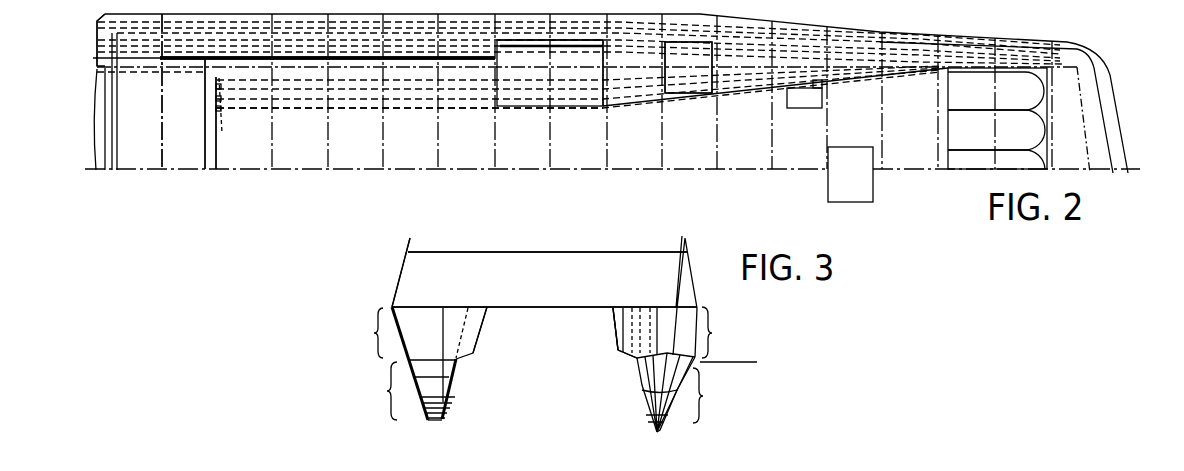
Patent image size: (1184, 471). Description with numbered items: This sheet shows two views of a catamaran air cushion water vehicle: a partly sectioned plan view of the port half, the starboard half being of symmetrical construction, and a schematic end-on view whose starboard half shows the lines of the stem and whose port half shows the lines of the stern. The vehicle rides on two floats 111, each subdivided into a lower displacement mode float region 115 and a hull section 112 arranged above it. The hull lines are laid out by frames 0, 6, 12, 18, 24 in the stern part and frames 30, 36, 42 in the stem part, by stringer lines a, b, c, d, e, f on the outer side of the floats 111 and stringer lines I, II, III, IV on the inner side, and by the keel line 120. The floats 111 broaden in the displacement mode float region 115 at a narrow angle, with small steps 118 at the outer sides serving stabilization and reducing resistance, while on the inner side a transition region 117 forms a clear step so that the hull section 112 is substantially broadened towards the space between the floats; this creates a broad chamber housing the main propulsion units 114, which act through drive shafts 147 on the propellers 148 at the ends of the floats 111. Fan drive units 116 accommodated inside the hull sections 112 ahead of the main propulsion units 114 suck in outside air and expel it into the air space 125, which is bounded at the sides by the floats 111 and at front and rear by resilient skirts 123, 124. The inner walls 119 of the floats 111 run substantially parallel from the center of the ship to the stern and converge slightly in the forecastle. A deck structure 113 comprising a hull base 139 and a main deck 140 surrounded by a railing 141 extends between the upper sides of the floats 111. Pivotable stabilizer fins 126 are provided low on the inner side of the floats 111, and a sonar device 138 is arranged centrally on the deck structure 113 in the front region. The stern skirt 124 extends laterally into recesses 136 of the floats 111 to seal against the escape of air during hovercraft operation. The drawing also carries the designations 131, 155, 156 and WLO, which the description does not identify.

In FIG. 3, the floats 111 is at (353, 348).
In FIG. 3, the hull section 112 is at (544, 332).
In FIG. 3, the deck structure 113 is at (537, 295).
In FIG. 2, the main propulsion units 114 is at (505, 55).
In FIG. 3, the displacement mode float region 115 is at (549, 392).
In FIG. 2, the fan drive units 116 is at (672, 85).
In FIG. 3, the transition region 117 is at (473, 353).
In FIG. 3, the small steps 118 is at (398, 353).
In FIG. 2, the inner walls 119 is at (447, 110).
In FIG. 3, the inner walls 119 is at (485, 330).
In FIG. 3, the keel line 120 is at (432, 422).
In FIG. 2, the resilient skirt 123 is at (1050, 143).
In FIG. 2, the resilient skirt 124 is at (185, 152).
In FIG. 3, the air space 125 is at (563, 345).
In FIG. 2, the stabilizer fins 126 is at (813, 104).
In FIG. 2, the stern compartment tubes 131 is at (1040, 97).
In FIG. 2, the recesses 136 is at (222, 128).
In FIG. 2, the sonar device 138 is at (873, 192).
In FIG. 3, the hull base 139 is at (492, 307).
In FIG. 3, the main deck 140 is at (552, 252).
In FIG. 3, the railing 141 is at (410, 238).
In FIG. 2, the drive shafts 147 is at (353, 60).
In FIG. 2, the propellers 148 is at (105, 15).
In FIG. 2, the bulkhead 155 is at (207, 77).
In FIG. 2, the frame 156 is at (193, 63).
In FIG. 3, the frame 0 is at (443, 400).
In FIG. 3, the frame 6 is at (443, 403).
In FIG. 3, the frame 12 is at (447, 407).
In FIG. 3, the frame 18 is at (445, 417).
In FIG. 3, the frame 24 is at (438, 423).
In FIG. 3, the frame 30 is at (616, 307).
In FIG. 3, the frame 36 is at (634, 307).
In FIG. 3, the frame 42 is at (651, 307).
In FIG. 2, the stringer line a is at (518, 50).
In FIG. 2, the stringer line b is at (542, 43).
In FIG. 2, the stringer line c is at (563, 42).
In FIG. 2, the stringer line d is at (595, 40).
In FIG. 2, the stringer line e is at (617, 25).
In FIG. 2, the stringer line f is at (632, 25).
In FIG. 2, the stringer line I is at (517, 70).
In FIG. 2, the stringer line II is at (535, 80).
In FIG. 2, the stringer line III is at (540, 100).
In FIG. 2, the stringer line IV is at (560, 112).
In FIG. 3, the waterline WLO is at (776, 362).